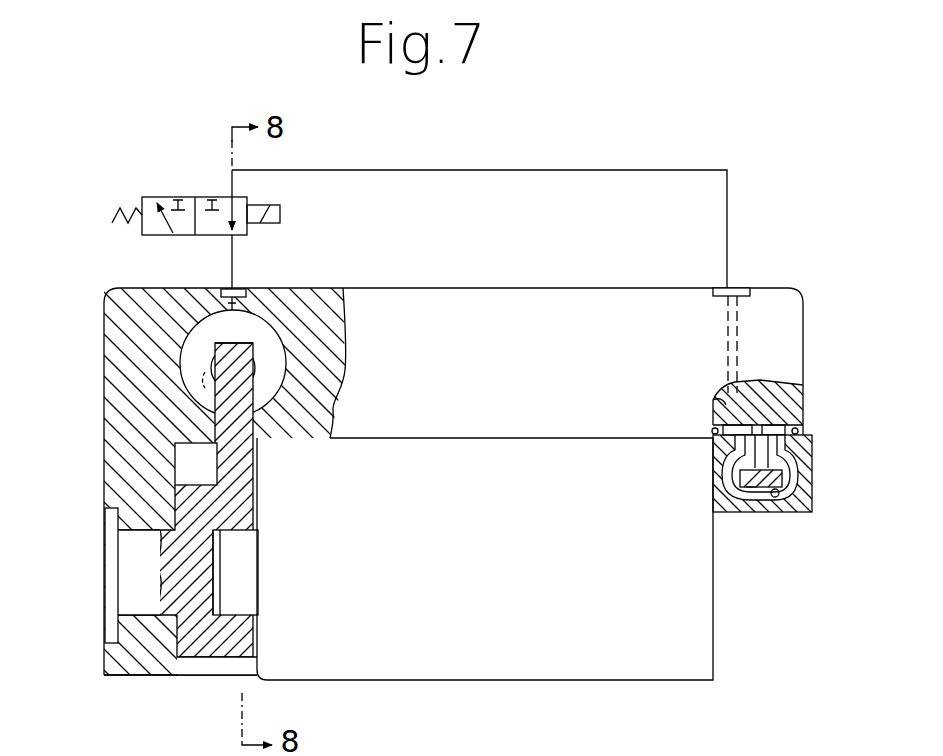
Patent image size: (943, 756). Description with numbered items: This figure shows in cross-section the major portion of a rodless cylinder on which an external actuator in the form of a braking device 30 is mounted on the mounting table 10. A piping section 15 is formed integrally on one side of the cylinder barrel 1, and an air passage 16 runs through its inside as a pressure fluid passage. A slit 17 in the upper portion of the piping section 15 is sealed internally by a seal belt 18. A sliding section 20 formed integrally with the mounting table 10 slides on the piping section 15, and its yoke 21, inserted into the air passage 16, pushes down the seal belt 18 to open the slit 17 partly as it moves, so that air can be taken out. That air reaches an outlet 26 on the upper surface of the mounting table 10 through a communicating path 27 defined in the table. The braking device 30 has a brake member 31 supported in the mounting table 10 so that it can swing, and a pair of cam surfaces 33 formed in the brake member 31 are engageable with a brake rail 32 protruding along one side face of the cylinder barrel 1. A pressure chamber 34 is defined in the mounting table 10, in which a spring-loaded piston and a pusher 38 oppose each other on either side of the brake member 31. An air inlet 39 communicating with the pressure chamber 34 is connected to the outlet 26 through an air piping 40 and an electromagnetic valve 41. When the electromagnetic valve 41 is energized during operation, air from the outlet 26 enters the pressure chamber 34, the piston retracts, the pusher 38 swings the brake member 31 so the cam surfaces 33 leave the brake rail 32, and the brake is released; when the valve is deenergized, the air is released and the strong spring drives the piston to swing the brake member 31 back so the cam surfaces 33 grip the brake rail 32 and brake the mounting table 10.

The cylinder barrel 1 is at (506, 559).
The mounting table 10 is at (108, 328).
The piping section 15 is at (807, 478).
The air passage 16 is at (775, 498).
The slit 17 is at (777, 457).
The seal belt 18 is at (753, 490).
The sliding section 20 is at (795, 410).
The yoke 21 is at (783, 500).
The outlet 26 is at (745, 287).
The communicating path 27 is at (731, 405).
The braking device 30 is at (270, 472).
The brake member 31 is at (190, 475).
The brake rail 32 is at (247, 587).
The cam surfaces 33 is at (240, 535).
The pressure chamber 34 is at (280, 372).
The pusher 38 is at (215, 372).
The air inlet 39 is at (246, 292).
The air piping 40 is at (232, 270).
The electromagnetic valve 41 is at (142, 197).